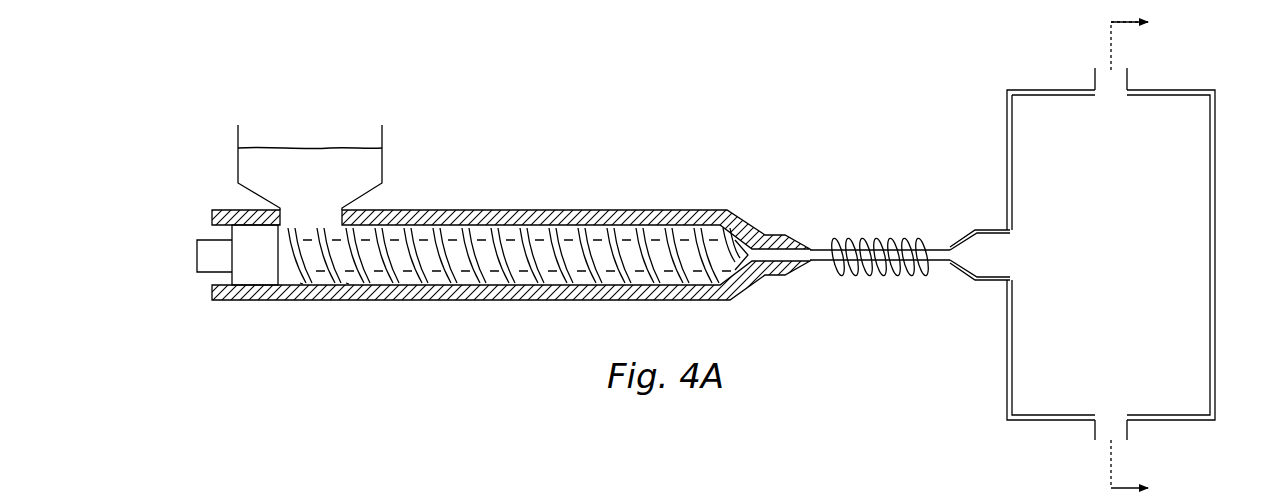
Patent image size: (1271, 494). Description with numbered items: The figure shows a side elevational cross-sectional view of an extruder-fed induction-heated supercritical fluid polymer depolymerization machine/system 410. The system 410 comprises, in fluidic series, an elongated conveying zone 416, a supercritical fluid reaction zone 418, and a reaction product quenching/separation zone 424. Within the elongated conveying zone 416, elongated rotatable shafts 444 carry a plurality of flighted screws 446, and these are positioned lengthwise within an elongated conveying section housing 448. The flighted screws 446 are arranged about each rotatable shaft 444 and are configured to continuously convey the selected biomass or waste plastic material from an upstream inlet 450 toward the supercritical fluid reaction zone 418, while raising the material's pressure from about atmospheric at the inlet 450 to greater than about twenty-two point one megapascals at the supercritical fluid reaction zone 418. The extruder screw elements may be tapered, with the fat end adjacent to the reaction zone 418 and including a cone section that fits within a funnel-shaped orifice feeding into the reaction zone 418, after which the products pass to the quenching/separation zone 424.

The extruder-fed induction-heated supercritical fluid polymer depolymerization machi 410 is at (660, 128).
The elongated conveying zone 416 is at (495, 304).
The supercritical fluid reaction zone 418 is at (881, 285).
The reaction product quenching/separation zone 424 is at (1226, 196).
The elongated rotatable shaft 444 is at (192, 262).
The flighted screws 446 is at (357, 291).
The elongated conveying section housing 448 is at (533, 209).
The upstream inlet 450 is at (318, 140).